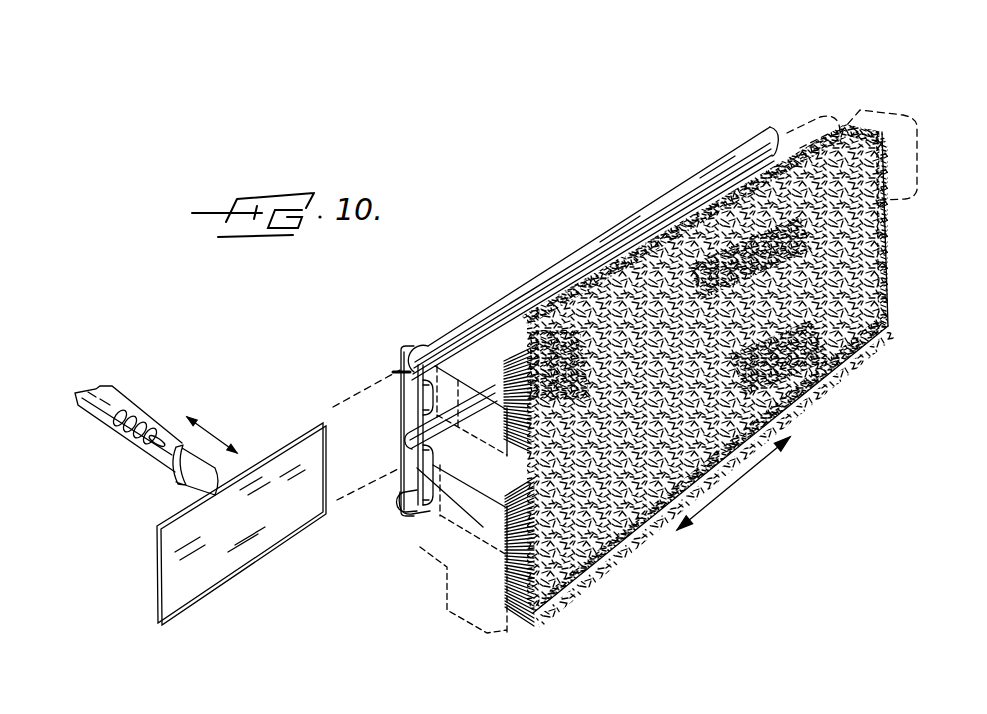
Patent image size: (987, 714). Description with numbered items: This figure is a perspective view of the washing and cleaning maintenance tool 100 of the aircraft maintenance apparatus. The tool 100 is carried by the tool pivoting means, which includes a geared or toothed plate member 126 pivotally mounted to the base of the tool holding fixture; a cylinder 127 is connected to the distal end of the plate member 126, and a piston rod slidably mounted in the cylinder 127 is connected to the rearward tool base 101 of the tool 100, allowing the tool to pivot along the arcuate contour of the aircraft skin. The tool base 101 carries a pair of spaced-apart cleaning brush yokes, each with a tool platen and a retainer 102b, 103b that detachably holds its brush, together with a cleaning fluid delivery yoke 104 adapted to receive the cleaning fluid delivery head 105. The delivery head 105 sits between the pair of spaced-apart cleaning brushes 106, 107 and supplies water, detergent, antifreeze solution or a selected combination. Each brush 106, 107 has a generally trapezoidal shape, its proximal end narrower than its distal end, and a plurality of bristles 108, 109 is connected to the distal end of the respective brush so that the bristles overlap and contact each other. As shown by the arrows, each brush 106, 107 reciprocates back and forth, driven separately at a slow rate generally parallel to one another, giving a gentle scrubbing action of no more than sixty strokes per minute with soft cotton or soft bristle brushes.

The maintenance tool 100 is at (700, 108).
The tool base 101 is at (403, 345).
The retainer 102b is at (472, 397).
The retainer 103b is at (478, 500).
The cleaning fluid delivery yoke 104 is at (400, 447).
The cleaning fluid delivery head 105 is at (410, 500).
The cleaning brush 106 is at (858, 197).
The cleaning brush 107 is at (882, 318).
The bristles 108 is at (603, 310).
The bristles 109 is at (627, 537).
The plate member 126 is at (236, 478).
The cylinder 127 is at (168, 438).